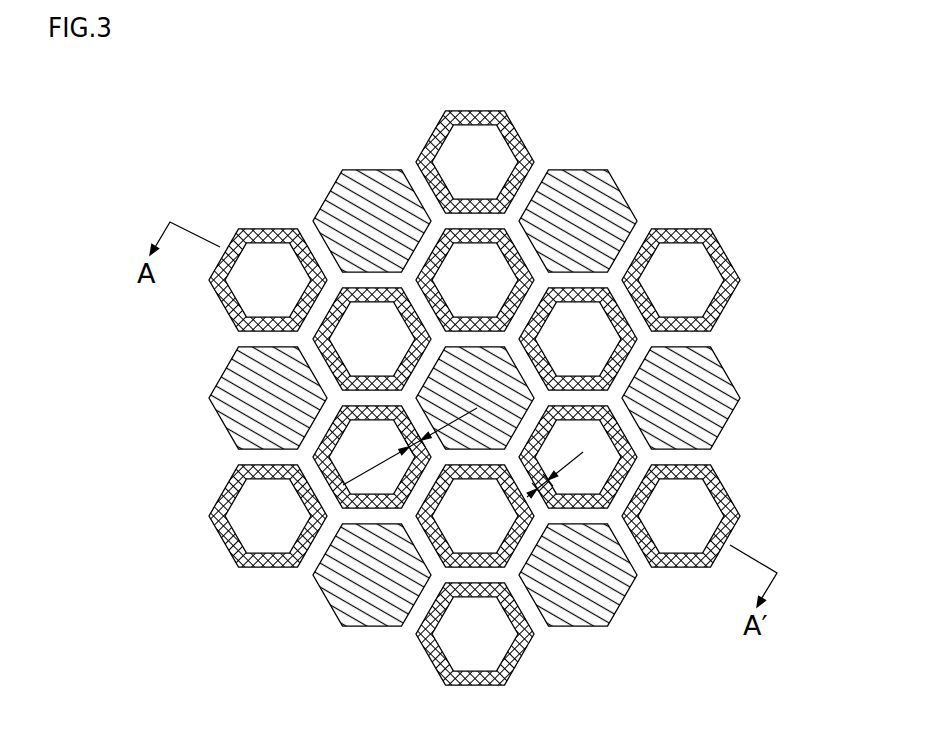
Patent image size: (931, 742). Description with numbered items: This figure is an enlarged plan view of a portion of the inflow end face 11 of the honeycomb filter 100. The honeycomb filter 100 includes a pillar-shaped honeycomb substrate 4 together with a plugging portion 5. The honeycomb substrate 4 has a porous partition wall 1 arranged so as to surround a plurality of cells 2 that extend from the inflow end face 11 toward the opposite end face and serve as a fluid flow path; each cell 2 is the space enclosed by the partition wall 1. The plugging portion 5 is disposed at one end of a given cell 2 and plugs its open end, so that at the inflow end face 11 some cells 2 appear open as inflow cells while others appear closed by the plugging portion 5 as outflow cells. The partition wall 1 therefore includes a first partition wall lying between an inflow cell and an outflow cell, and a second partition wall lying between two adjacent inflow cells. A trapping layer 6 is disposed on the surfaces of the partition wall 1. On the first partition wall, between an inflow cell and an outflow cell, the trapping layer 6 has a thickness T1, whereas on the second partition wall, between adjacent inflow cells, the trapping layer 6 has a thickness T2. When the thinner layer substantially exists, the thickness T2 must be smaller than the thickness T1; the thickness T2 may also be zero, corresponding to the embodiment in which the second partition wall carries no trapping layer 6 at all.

The honeycomb structure 100 is at (808, 81).
The honeycomb structure body 4 is at (630, 160).
The honeycomb segment / outer region 11 is at (275, 181).
The cell (open cell 1a, 1b) 1 is at (655, 322).
The partition wall (2a, 2b) 2 is at (523, 317).
The plugging portion 5 is at (467, 378).
The outer layer of cell wall (6a, 6b) 6 is at (412, 482).
The thickness of partition wall portion T1 is at (410, 446).
The thickness of partition wall portion T2 is at (515, 485).